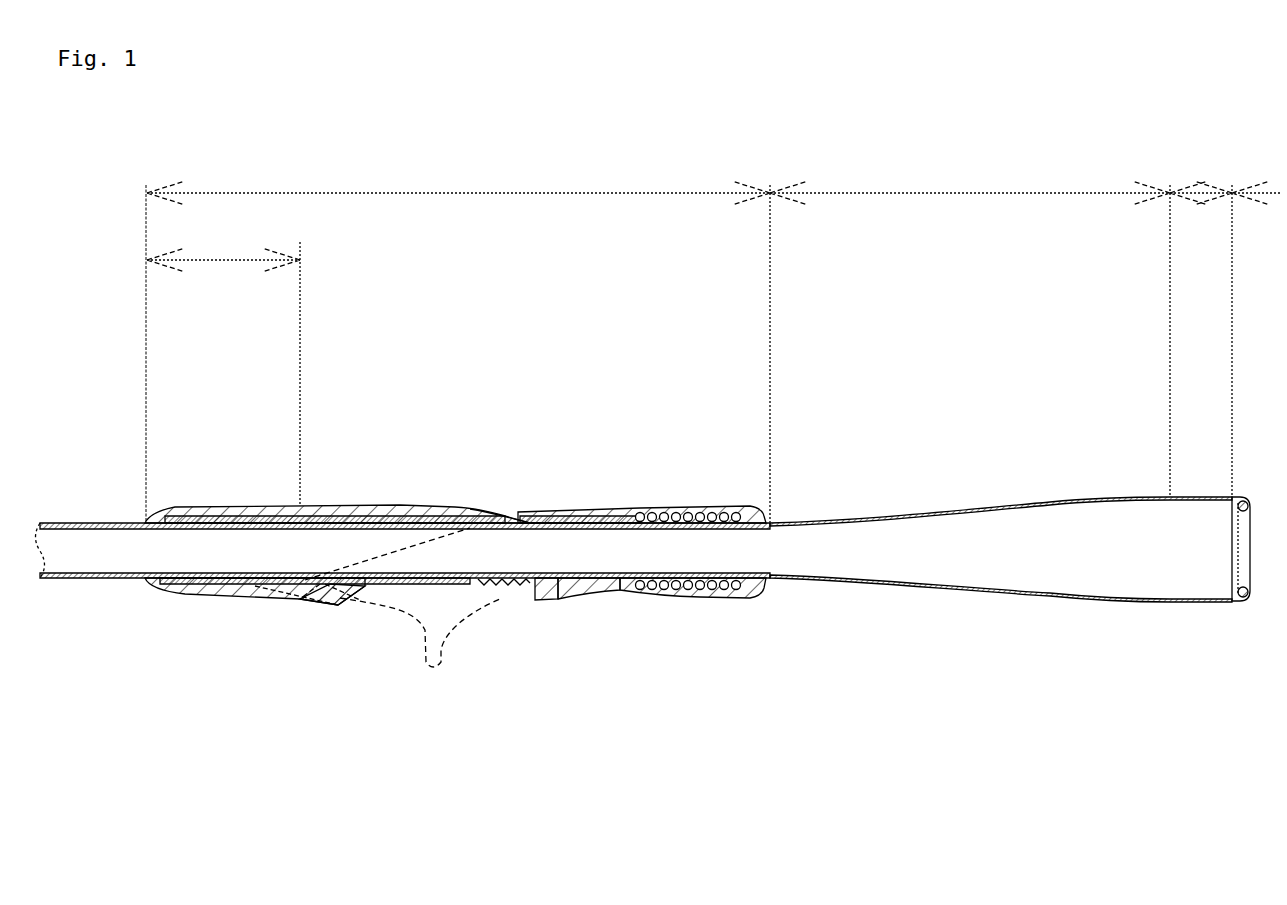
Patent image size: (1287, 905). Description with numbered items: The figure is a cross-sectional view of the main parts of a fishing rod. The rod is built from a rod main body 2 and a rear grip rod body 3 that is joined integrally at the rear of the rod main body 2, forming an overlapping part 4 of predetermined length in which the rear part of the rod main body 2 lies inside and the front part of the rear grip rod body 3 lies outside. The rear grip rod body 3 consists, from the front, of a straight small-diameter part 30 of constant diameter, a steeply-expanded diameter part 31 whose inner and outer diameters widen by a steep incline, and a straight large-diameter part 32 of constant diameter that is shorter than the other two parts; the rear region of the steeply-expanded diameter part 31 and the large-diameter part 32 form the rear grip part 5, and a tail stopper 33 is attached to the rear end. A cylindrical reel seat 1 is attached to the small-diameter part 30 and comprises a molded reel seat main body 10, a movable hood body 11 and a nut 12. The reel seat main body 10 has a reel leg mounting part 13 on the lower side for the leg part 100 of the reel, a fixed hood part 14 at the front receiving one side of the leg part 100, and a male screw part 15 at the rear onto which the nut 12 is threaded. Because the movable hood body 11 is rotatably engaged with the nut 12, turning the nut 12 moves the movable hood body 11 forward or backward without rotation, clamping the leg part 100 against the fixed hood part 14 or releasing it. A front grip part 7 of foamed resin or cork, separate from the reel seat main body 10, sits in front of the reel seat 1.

The reel seat 1 is at (532, 509).
The rod main body 2 is at (40, 582).
The rear grip rod body 3 is at (1053, 596).
The overlapping part 4 is at (223, 363).
The rear grip part 5 is at (1047, 502).
The front grip part 7 is at (184, 600).
The reel seat main body 10 is at (495, 520).
The movable hood body 11 is at (560, 602).
The nut 12 is at (708, 506).
The reel leg mounting part 13 is at (502, 602).
The fixed hood part 14 is at (319, 610).
The male screw part 15 is at (684, 600).
The small-diameter part 30 is at (458, 338).
The steeply-expanded diameter part 31 is at (970, 325).
The large-diameter part 32 is at (1225, 324).
The tail stopper 33 is at (1240, 600).
The leg part 100 is at (443, 657).